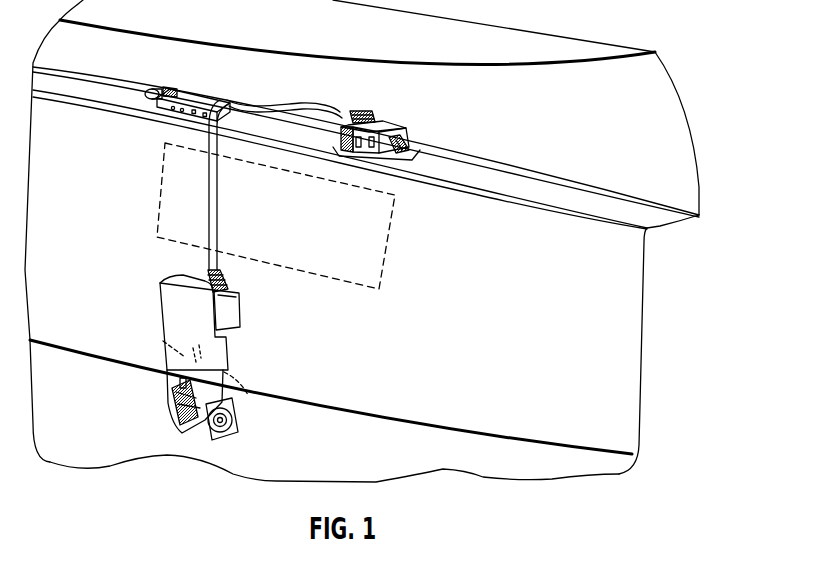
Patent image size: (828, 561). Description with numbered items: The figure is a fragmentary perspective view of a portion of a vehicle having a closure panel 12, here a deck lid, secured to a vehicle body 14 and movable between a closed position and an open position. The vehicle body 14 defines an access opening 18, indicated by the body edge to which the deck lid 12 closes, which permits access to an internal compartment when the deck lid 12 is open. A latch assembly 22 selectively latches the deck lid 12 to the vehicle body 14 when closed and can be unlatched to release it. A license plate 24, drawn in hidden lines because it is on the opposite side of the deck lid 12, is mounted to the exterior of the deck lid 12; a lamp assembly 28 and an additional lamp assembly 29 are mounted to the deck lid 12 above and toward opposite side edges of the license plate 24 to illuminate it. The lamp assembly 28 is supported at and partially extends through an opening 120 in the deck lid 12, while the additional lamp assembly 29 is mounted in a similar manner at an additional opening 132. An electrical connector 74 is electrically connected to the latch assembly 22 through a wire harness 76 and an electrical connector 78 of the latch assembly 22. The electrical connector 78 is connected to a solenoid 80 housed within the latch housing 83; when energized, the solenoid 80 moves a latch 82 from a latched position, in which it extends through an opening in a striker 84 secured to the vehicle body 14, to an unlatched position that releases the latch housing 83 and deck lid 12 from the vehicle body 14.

The closure panel 12 is at (679, 95).
The vehicle body 14 is at (267, 462).
The access opening 18 is at (525, 434).
The latch assembly 22 is at (193, 397).
The license plate 24 is at (393, 215).
The lamp assembly 28 is at (412, 113).
The additional lamp assembly 29 is at (211, 86).
The electrical connector 74 is at (362, 111).
The wire harness 76 is at (296, 105).
The electrical connector of the latch assembly 78 is at (228, 283).
The solenoid 80 is at (160, 341).
The latch 82 is at (231, 385).
The latch housing 83 is at (170, 304).
The striker 84 is at (177, 436).
The opening 120 is at (406, 147).
The additional opening 132 is at (153, 106).